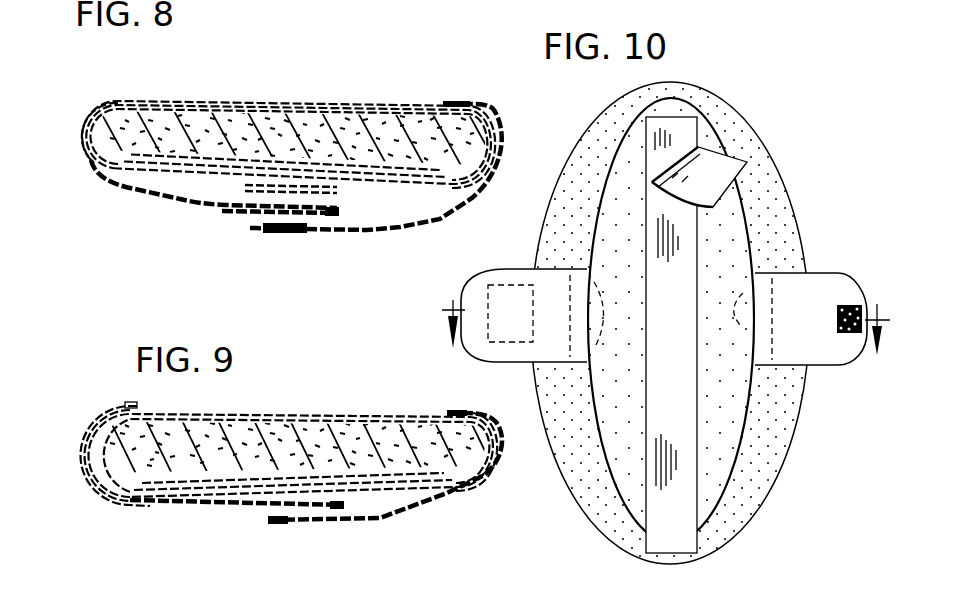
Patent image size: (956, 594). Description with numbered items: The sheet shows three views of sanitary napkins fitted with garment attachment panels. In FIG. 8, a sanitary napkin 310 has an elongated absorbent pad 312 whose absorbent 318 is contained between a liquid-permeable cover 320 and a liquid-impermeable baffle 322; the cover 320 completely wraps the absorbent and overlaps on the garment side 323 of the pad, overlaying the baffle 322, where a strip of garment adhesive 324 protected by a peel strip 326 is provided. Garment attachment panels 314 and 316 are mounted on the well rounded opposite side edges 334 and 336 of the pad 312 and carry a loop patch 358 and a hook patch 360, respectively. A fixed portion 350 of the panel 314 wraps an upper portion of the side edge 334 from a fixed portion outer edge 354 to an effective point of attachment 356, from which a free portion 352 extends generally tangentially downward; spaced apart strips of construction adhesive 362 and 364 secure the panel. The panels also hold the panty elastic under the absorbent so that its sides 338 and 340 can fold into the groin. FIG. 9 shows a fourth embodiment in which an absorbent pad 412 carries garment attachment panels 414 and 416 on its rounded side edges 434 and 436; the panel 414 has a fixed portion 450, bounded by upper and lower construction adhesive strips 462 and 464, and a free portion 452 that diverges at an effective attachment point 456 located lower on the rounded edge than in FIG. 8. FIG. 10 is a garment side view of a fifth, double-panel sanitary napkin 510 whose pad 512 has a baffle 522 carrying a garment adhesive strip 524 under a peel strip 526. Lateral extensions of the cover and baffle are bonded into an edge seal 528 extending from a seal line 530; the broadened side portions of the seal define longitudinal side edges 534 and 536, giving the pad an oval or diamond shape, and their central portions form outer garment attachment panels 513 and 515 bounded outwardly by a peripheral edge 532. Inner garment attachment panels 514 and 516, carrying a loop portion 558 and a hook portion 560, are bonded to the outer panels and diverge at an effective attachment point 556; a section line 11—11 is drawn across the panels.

In FIG. 8, the sanitary napkin 310 is at (221, 95).
In FIG. 8, the absorbent pad 312 is at (256, 92).
In FIG. 8, the garment attachment panel 314 is at (175, 211).
In FIG. 8, the garment attachment panel 316 is at (369, 236).
In FIG. 8, the absorbent 318 is at (303, 112).
In FIG. 8, the liquid-permeable cover 320 is at (280, 107).
In FIG. 8, the liquid-impermeable baffle 322 is at (404, 148).
In FIG. 8, the garment side 323 is at (397, 192).
In FIG. 8, the strip of garment adhesive 324 is at (340, 160).
In FIG. 8, the peel strip 326 is at (373, 160).
In FIG. 8, the side edge 334 is at (109, 92).
In FIG. 8, the side edge 336 is at (501, 103).
In FIG. 8, the side of the absorbent 338 is at (88, 138).
In FIG. 8, the side of the absorbent 340 is at (482, 103).
In FIG. 8, the fixed portion 350 is at (99, 104).
In FIG. 8, the free portion 352 is at (130, 188).
In FIG. 8, the fixed portion outer edge 354 is at (143, 103).
In FIG. 8, the effective point of attachment 356 is at (95, 158).
In FIG. 8, the loop patch 358 is at (337, 216).
In FIG. 8, the hook patch 360 is at (278, 234).
In FIG. 8, the strip of construction adhesive 362 is at (127, 103).
In FIG. 8, the strip of construction adhesive 364 is at (88, 130).
In FIG. 9, the absorbent pad 412 is at (307, 408).
In FIG. 9, the garment attachment panel 414 is at (194, 508).
In FIG. 9, the garment attachment panel 416 is at (378, 530).
In FIG. 9, the rounded side edge 434 is at (83, 432).
In FIG. 9, the rounded side edge 436 is at (508, 413).
In FIG. 9, the fixed portion 450 is at (103, 418).
In FIG. 9, the free portion 452 is at (165, 500).
In FIG. 9, the effective attachment point 456 is at (132, 495).
In FIG. 9, the upper construction adhesive strip 462 is at (131, 402).
In FIG. 9, the lower construction adhesive strip 464 is at (120, 490).
In FIG. 10, the sanitary napkin 510 is at (814, 189).
In FIG. 10, the absorbent pad 512 is at (808, 207).
In FIG. 10, the outer garment attachment panel 513 is at (553, 174).
In FIG. 10, the garment attachment panel 514 is at (520, 263).
In FIG. 10, the outer garment attachment panel 515 is at (785, 159).
In FIG. 10, the garment attachment panel 516 is at (831, 262).
In FIG. 10, the liquid-impermeable baffle 522 is at (637, 447).
In FIG. 10, the garment adhesive strip 524 is at (683, 130).
In FIG. 10, the peel strip 526 is at (713, 167).
In FIG. 10, the edge seal 528 is at (622, 114).
In FIG. 10, the seal line 530 is at (598, 167).
In FIG. 10, the peripheral edge 532 is at (550, 213).
In FIG. 10, the longitudinal side edge 534 is at (545, 448).
In FIG. 10, the longitudinal side edge 536 is at (808, 412).
In FIG. 10, the effective attachment point 556 is at (669, 307).
In FIG. 10, the loop portion 558 is at (492, 357).
In FIG. 10, the hook portion 560 is at (849, 336).
In FIG. 10, the section line 11 is at (659, 318).